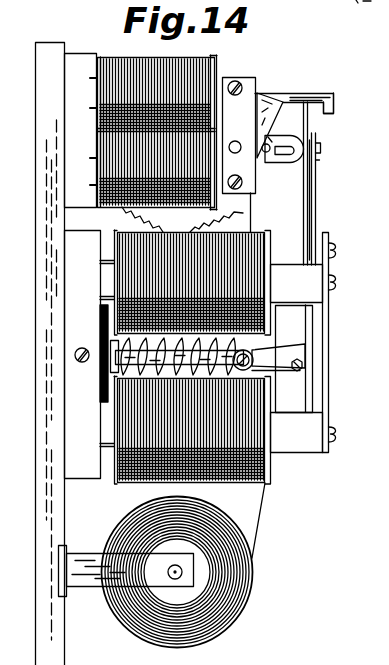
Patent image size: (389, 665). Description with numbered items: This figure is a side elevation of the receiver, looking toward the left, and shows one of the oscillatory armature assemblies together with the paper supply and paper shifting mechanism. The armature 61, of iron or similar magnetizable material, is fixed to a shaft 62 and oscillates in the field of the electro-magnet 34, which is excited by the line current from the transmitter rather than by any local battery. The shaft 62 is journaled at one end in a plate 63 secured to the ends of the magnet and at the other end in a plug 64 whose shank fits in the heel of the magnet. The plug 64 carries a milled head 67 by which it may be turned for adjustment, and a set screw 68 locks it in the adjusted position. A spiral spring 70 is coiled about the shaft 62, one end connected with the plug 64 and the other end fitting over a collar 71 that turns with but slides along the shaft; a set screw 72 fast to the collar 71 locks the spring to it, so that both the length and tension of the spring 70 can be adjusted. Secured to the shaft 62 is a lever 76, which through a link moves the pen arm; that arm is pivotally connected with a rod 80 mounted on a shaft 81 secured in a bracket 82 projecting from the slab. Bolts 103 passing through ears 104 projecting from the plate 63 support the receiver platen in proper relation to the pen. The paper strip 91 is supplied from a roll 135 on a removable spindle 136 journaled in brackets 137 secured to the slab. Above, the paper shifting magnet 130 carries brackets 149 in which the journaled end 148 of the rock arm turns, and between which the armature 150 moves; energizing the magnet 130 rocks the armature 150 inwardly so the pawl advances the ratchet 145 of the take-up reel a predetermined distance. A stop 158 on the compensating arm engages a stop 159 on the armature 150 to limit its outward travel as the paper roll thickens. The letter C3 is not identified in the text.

The ears 104 is at (105, 6).
The bolts 103 is at (200, 6).
The paper shifting magnet 130 is at (163, 125).
The brackets 149 is at (255, 78).
The journaled end of rock arm 148 is at (239, 141).
The armature 150 is at (266, 100).
The rod 80 is at (311, 99).
The bracket 82 is at (302, 95).
The shaft 81 is at (334, 104).
The stop on armature 159 is at (277, 141).
The stop 158 is at (268, 153).
The lever 76 is at (316, 212).
The ratchet 145 is at (243, 213).
The frame panel C3 is at (35, 248).
The milled head 67 is at (103, 398).
The set screw 68 is at (82, 362).
The plug 64 is at (106, 341).
The spiral spring 70 is at (254, 367).
The shaft 62 is at (265, 355).
The collar 71 is at (268, 363).
The set screw 72 is at (262, 370).
The armature 61 is at (297, 359).
The plate 63 is at (327, 323).
The electro-magnet 34 is at (235, 483).
The paper strip 91 is at (257, 527).
The roll 135 is at (237, 608).
The brackets 137 is at (126, 571).
The removable spindle 136 is at (183, 572).